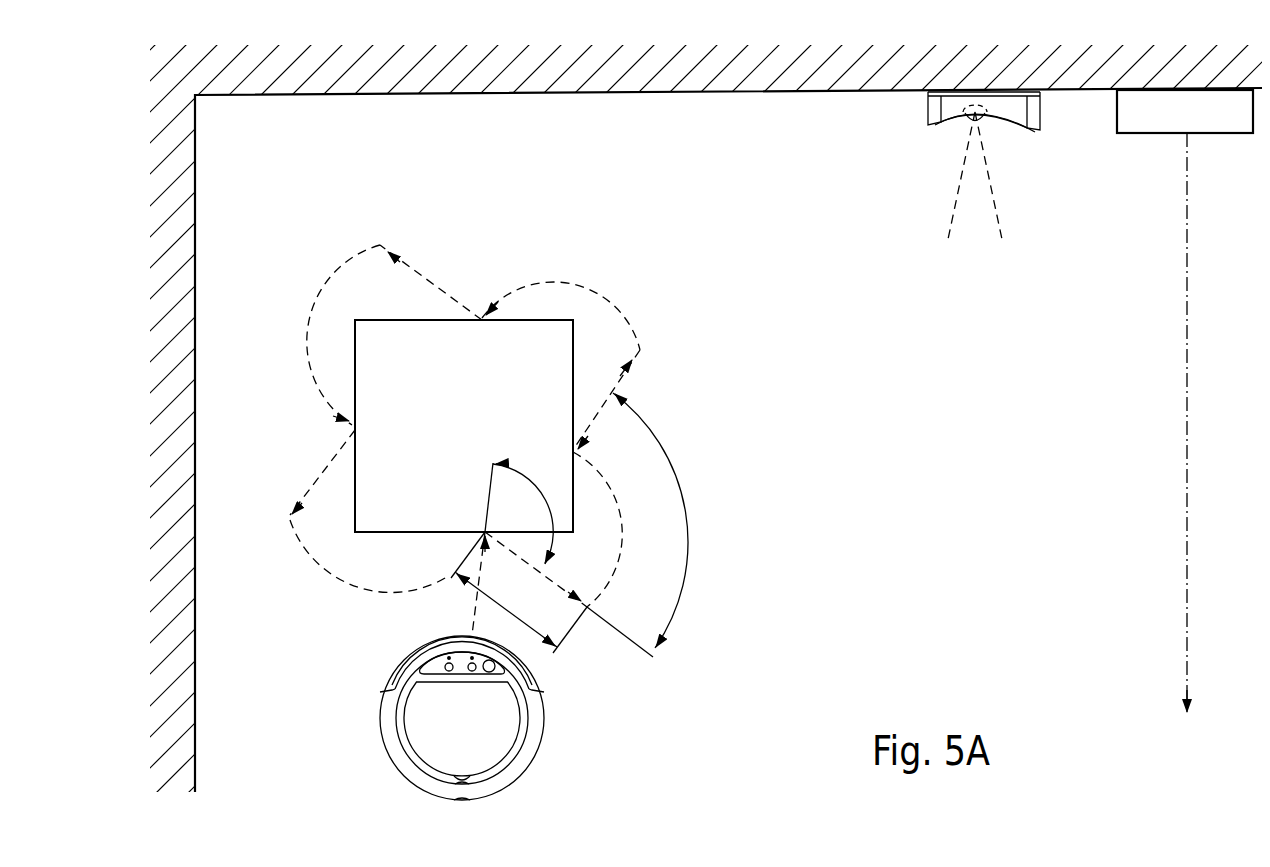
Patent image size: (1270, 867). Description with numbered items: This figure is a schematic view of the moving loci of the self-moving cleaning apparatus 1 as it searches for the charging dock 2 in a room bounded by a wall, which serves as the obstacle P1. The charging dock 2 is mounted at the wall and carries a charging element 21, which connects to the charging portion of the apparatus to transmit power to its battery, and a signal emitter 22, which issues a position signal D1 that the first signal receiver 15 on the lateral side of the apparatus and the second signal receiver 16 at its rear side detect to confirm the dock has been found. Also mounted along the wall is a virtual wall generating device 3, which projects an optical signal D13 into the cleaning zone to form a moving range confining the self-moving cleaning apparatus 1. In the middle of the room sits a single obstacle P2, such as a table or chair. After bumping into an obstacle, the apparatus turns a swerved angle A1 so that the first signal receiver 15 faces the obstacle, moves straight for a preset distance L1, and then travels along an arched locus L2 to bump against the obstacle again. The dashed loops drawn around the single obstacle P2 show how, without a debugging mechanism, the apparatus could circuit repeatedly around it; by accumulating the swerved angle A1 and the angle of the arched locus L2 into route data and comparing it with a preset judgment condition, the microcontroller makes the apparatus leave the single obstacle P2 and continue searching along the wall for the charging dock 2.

The self-moving cleaning apparatus 1 is at (459, 723).
The first signal receiver 15 is at (385, 752).
The second signal receiver 16 is at (462, 800).
The charging dock 2 is at (943, 147).
The charging element 21 is at (968, 122).
The signal emitter 22 is at (993, 118).
The virtual wall generating device 3 is at (1140, 133).
The obstacle P1 is at (680, 95).
The single obstacle P2 is at (550, 320).
The position signal D1 is at (950, 226).
The optical signal D13 is at (1187, 490).
The swerved angle A1 is at (542, 507).
The preset distance L1 is at (519, 592).
The arched locus L2 is at (688, 547).